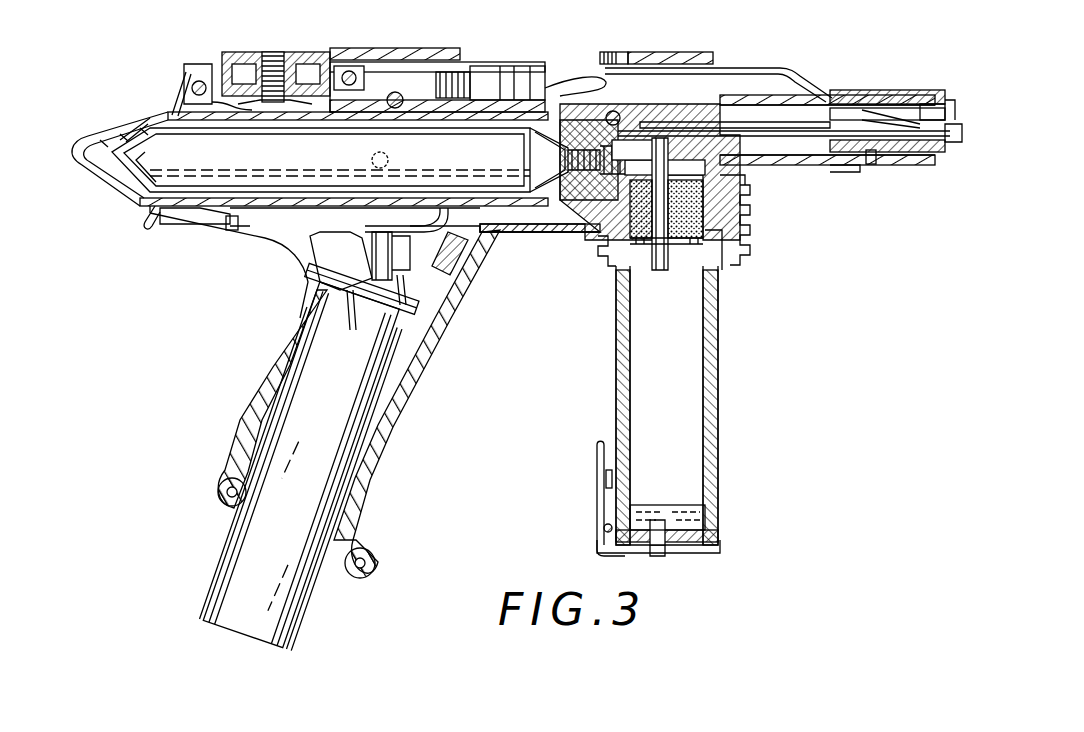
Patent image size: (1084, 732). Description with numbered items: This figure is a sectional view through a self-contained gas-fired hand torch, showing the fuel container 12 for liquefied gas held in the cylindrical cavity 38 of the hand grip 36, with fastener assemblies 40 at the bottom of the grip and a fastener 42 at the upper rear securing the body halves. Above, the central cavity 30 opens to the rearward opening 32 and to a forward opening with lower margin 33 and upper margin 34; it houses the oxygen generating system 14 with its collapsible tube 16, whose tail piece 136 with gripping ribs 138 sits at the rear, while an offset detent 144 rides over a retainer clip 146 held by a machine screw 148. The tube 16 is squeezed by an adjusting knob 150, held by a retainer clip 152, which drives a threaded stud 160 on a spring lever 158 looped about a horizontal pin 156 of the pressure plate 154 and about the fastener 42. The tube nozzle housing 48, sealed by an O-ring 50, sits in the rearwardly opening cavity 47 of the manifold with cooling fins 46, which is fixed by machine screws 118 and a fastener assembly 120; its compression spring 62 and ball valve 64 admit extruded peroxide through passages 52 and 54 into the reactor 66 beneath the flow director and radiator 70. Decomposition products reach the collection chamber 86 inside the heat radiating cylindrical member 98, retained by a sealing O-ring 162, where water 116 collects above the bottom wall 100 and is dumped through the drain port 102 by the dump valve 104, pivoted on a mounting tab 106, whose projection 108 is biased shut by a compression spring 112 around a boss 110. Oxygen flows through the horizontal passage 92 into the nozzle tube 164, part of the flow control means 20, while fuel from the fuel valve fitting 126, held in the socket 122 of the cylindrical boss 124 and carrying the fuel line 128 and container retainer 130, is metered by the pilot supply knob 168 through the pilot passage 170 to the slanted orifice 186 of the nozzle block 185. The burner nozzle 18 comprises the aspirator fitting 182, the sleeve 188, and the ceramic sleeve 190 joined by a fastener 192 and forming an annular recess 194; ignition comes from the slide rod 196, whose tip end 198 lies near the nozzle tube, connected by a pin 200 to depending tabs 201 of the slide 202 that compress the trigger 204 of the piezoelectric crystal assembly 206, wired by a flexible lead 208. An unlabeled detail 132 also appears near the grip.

The handle 12 is at (290, 536).
The gas cartridge cylinder 14 is at (740, 314).
The material cartridge 16 is at (262, 166).
The nozzle tip 18 is at (965, 116).
The dispensing head 20 is at (640, 40).
The frame 30 is at (350, 228).
The housing seam 32 is at (140, 118).
The bottom plate 33 is at (512, 232).
The barrel 34 is at (728, 94).
The grip sleeve 36 is at (418, 376).
The handle liner 38 is at (378, 470).
The sleeve end 40 is at (222, 496).
The latch bracket 42 is at (192, 66).
The thread 46 is at (742, 196).
The valve stem 47 is at (655, 130).
The cap 48 is at (575, 198).
The seal 50 is at (582, 138).
The valve body 52 is at (586, 226).
The valve pin 54 is at (668, 156).
The screw 62 is at (620, 112).
The spring 64 is at (570, 158).
The thread 66 is at (745, 216).
The filter 70 is at (668, 250).
The cylinder chamber 86 is at (682, 382).
The rod 92 is at (790, 165).
The cylinder wall 98 is at (722, 392).
The bottom cap 100 is at (700, 545).
The cap boss 102 is at (662, 520).
The clip 104 is at (600, 550).
The clip arm 106 is at (598, 512).
The cap rim 108 is at (658, 556).
The pin 110 is at (604, 478).
The clip top 112 is at (604, 460).
The cup 116 is at (700, 505).
The block 118 is at (470, 262).
The cover plate 120 is at (622, 100).
The fitting 122 is at (400, 252).
The bracket 124 is at (341, 260).
The tube 126 is at (395, 230).
The cartridge nose 128 is at (462, 190).
The flange 130 is at (312, 290).
The flange lip 132 is at (348, 302).
The nose housing 136 is at (120, 125).
The housing top 138 is at (138, 8).
The trigger pivot 144 is at (205, 222).
The trigger 146 is at (218, 226).
The pivot pin 148 is at (232, 232).
The clamp block 150 is at (232, 54).
The spring clip 152 is at (252, 104).
The rail 154 is at (425, 62).
The screw 156 is at (396, 110).
The axis 158 is at (296, 132).
The thumb screw 160 is at (272, 52).
The thread 162 is at (730, 262).
The collar 164 is at (866, 108).
The knurled nut 168 is at (610, 52).
The plunger rod 170 is at (738, 120).
The nozzle body 182 is at (938, 165).
The set screw 185 is at (880, 165).
The needle 186 is at (890, 112).
The link 188 is at (790, 74).
The nozzle housing 190 is at (930, 168).
The sleeve 192 is at (862, 172).
The needle seat 194 is at (936, 104).
The lever 196 is at (760, 68).
The orifice 198 is at (956, 100).
The block 200 is at (349, 66).
The arm 201 is at (345, 92).
The bar 202 is at (395, 48).
The knurled knob 204 is at (448, 98).
The housing 206 is at (508, 66).
The wire spring 208 is at (582, 78).